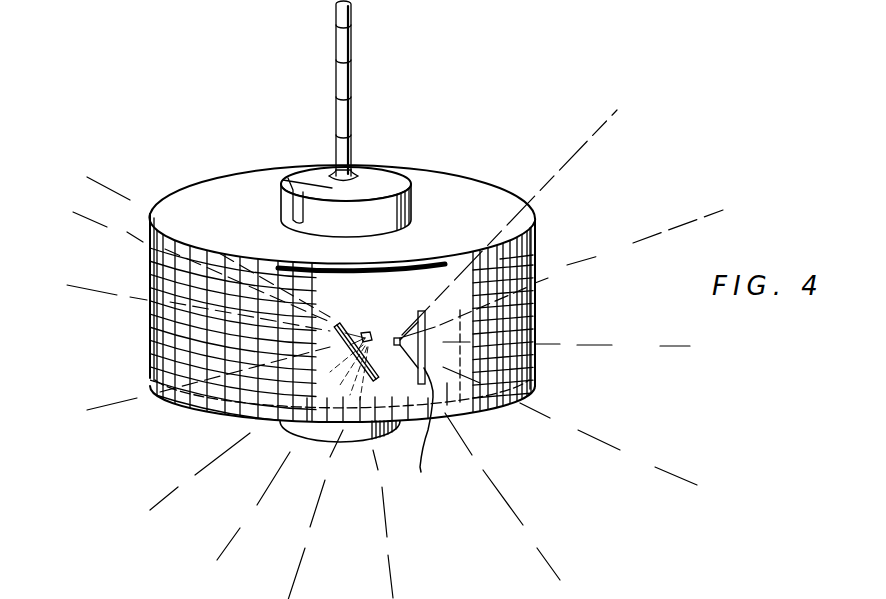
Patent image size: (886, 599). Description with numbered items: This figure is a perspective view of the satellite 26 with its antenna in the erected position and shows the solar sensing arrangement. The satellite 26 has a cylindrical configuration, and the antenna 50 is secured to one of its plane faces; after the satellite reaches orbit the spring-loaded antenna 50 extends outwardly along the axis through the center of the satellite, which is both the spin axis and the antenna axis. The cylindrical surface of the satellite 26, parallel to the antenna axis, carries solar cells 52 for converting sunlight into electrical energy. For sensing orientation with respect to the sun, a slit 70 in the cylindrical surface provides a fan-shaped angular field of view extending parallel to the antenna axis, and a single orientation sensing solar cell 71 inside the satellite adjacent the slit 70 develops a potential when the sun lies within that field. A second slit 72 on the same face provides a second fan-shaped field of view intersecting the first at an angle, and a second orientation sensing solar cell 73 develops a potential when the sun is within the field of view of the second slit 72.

The satellite 26 is at (140, 331).
The antenna 50 is at (352, 44).
The solar cells 52 is at (536, 330).
The slit 70 is at (436, 427).
The orientation sensing solar cell 71 is at (396, 338).
The second slit 72 is at (377, 373).
The second orientation sensing solar cell 73 is at (368, 331).